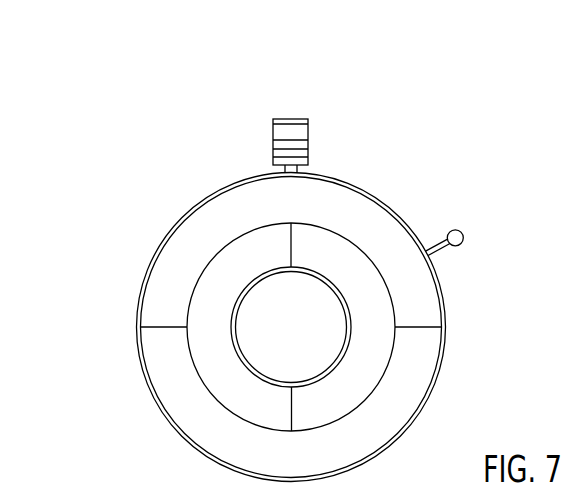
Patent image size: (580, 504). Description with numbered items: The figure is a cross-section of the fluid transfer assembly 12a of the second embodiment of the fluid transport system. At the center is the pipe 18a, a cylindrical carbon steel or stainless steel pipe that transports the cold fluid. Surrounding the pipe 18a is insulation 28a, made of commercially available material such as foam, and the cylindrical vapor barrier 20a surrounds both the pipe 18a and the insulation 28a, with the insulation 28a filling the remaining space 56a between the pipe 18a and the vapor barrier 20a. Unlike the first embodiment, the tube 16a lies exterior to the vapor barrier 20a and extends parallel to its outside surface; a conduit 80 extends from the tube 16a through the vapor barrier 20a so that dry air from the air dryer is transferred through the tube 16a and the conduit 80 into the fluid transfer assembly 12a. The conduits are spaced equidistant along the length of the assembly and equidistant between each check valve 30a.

The fluid transfer assembly 12a is at (441, 100).
The vapor barrier 20a is at (124, 312).
The remaining space 56a is at (381, 232).
The pipe 18a is at (354, 372).
The insulation 28a is at (175, 273).
The check valve 30a is at (260, 134).
The conduit 80 is at (436, 247).
The tube 16a is at (454, 229).